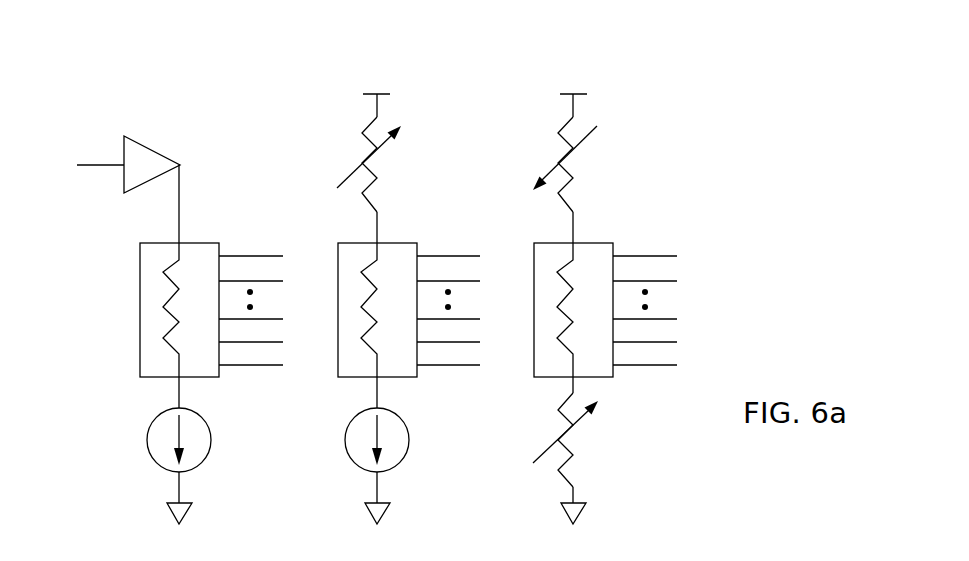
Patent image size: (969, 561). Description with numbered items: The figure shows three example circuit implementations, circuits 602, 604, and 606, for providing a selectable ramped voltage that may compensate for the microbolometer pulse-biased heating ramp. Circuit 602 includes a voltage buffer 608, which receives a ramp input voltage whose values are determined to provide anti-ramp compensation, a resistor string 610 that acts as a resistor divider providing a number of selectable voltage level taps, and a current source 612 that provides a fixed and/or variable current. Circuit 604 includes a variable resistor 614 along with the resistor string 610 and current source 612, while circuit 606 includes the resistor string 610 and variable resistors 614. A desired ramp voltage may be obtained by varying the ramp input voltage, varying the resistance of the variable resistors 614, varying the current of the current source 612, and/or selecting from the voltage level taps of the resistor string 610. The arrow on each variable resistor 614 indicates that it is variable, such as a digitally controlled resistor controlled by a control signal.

The circuit 602 is at (229, 128).
The circuit 604 is at (445, 103).
The circuit 606 is at (643, 103).
The voltage buffer 608 is at (122, 180).
The resistor string 610 is at (157, 242).
The current source 612 is at (212, 430).
The variable resistor 614 is at (378, 165).